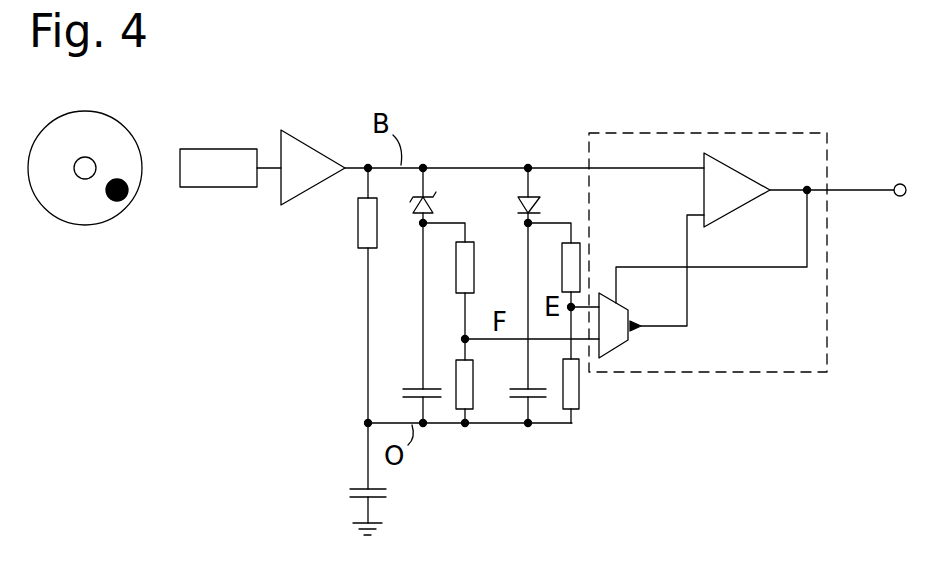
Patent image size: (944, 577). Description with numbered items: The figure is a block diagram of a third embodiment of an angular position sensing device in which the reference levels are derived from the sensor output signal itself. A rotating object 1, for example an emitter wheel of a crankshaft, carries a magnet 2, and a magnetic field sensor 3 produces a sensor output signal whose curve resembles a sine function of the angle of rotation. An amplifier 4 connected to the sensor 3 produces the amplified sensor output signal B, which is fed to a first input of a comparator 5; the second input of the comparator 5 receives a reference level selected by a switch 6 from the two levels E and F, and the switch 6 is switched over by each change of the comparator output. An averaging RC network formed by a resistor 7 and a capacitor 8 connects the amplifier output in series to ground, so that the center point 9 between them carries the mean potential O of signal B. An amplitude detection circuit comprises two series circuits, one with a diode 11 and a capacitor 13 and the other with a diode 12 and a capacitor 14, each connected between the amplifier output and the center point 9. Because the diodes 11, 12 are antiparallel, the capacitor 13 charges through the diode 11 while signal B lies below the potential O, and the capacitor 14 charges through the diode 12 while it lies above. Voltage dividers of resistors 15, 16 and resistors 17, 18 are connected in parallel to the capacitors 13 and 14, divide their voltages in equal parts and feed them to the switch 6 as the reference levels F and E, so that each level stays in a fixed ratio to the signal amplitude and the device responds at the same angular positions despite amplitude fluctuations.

The rotating object 1 is at (68, 207).
The magnet 2 is at (125, 204).
The magnetic field sensor 3 is at (220, 168).
The amplifier 4 is at (306, 158).
The comparator 5 is at (730, 180).
The switch 6 is at (618, 337).
The resistor 7 is at (363, 225).
The capacitor 8 is at (358, 485).
The center point 9 is at (367, 421).
The diode 11 is at (432, 210).
The diode 12 is at (541, 200).
The capacitor 13 is at (413, 385).
The capacitor 14 is at (518, 385).
The resistor 15 is at (474, 261).
The resistor 16 is at (462, 385).
The resistor 17 is at (568, 275).
The resistor 18 is at (572, 383).